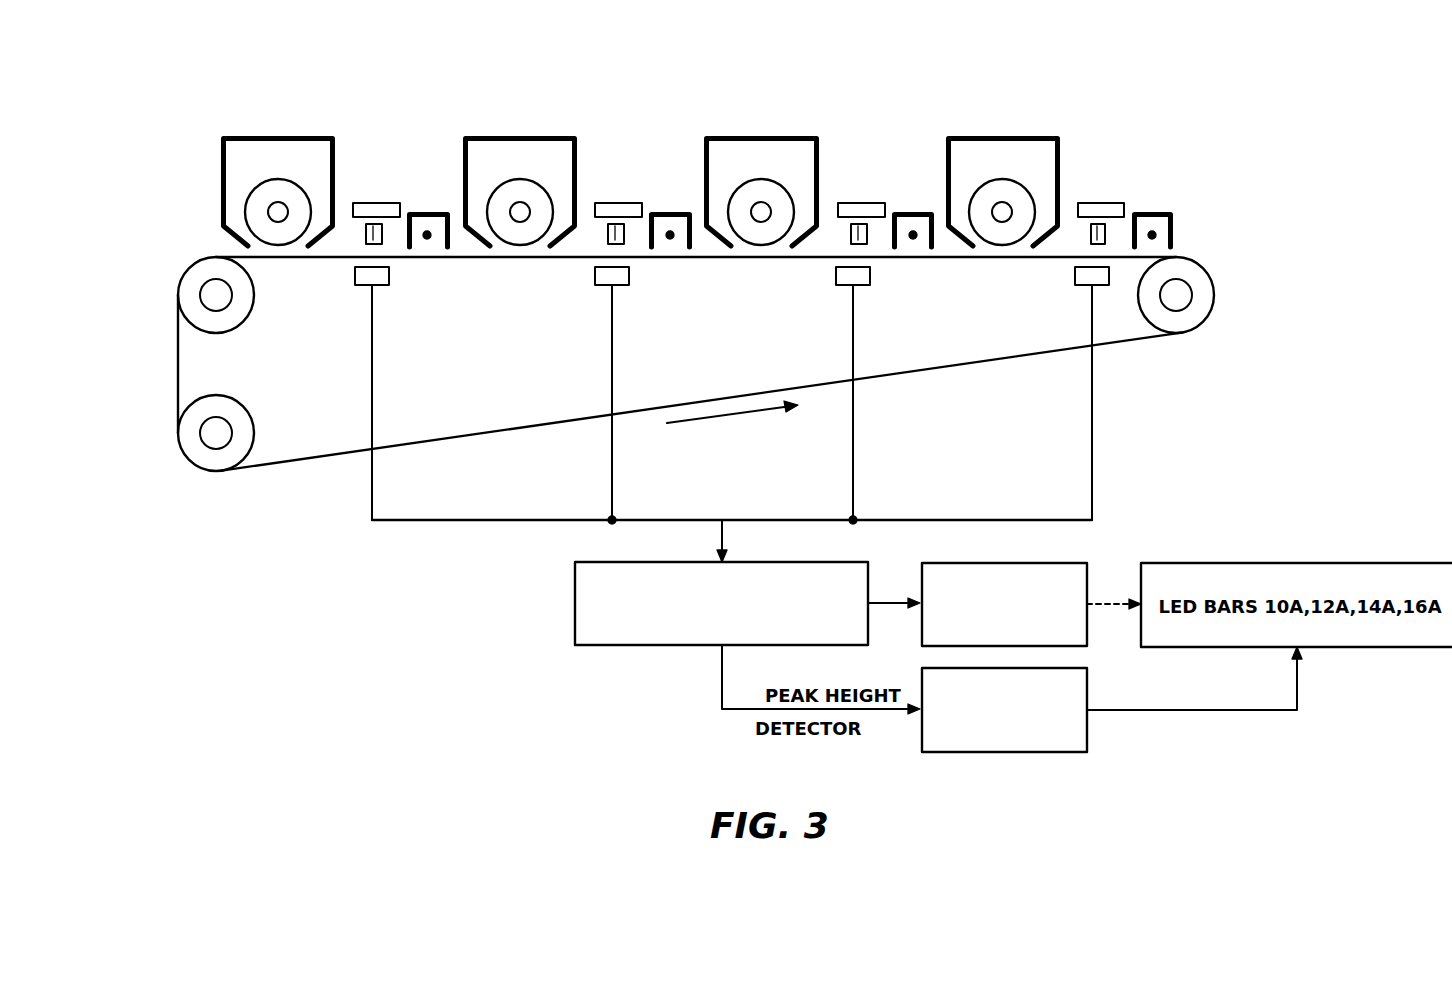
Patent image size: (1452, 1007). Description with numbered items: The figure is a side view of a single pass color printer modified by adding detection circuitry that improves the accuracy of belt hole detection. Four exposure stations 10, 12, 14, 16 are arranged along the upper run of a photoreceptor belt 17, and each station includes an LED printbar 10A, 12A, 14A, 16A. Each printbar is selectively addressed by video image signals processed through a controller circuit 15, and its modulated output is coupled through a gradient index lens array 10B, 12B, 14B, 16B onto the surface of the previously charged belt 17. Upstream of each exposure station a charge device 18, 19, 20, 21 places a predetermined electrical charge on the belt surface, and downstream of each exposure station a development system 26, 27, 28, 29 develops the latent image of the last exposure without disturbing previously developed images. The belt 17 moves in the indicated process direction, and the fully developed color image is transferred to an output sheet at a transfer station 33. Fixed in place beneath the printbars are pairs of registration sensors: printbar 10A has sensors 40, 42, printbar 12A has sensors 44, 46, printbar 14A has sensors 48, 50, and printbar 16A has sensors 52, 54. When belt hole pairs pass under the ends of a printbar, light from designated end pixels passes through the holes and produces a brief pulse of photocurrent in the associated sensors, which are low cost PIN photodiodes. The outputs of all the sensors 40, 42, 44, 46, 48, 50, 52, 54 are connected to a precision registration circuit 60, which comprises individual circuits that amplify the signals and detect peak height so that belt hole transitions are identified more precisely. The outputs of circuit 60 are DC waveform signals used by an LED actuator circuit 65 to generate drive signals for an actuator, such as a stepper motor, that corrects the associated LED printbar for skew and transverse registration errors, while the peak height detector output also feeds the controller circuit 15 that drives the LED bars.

The exposure station 10 is at (1092, 193).
The exposure station 12 is at (884, 193).
The exposure station 14 is at (641, 193).
The exposure station 16 is at (399, 193).
The LED printbar 10A is at (1100, 202).
The LED printbar 12A is at (860, 202).
The LED printbar 14A is at (617, 202).
The LED printbar 16A is at (374, 202).
The gradient index lens array 10B is at (1091, 246).
The gradient index lens array 12B is at (861, 244).
The gradient index lens array 14B is at (618, 244).
The gradient index lens array 16B is at (376, 244).
The charge device 18 is at (1152, 212).
The charge device 19 is at (913, 212).
The charge device 20 is at (670, 212).
The charge device 21 is at (427, 212).
The development system 26 is at (1002, 136).
The development system 27 is at (761, 136).
The development system 28 is at (519, 136).
The development system 29 is at (278, 136).
The transfer station 33 is at (669, 369).
The photoreceptor belt 17 is at (467, 437).
The registration sensor 40 is at (1140, 393).
The registration sensor 42 is at (1096, 284).
The registration sensor 44 is at (797, 393).
The registration sensor 46 is at (843, 278).
The registration sensor 48 is at (560, 393).
The registration sensor 50 is at (603, 278).
The registration sensor 52 is at (346, 393).
The registration sensor 54 is at (365, 282).
The registration circuit 60 is at (575, 602).
The LED actuator circuit 65 is at (920, 582).
The controller circuit 15 is at (1003, 752).